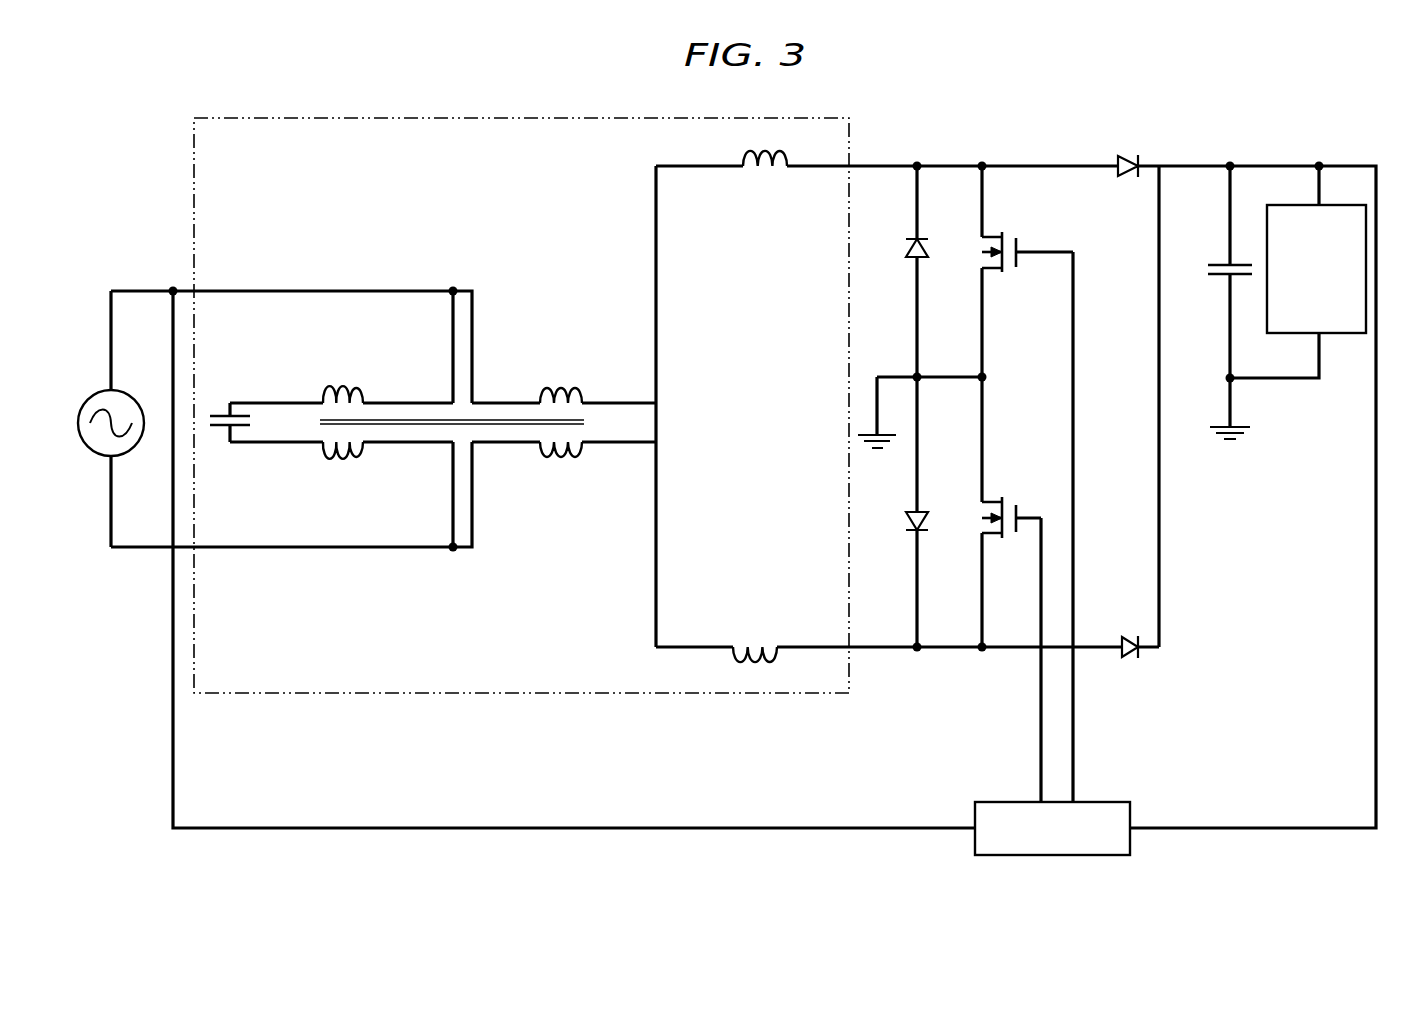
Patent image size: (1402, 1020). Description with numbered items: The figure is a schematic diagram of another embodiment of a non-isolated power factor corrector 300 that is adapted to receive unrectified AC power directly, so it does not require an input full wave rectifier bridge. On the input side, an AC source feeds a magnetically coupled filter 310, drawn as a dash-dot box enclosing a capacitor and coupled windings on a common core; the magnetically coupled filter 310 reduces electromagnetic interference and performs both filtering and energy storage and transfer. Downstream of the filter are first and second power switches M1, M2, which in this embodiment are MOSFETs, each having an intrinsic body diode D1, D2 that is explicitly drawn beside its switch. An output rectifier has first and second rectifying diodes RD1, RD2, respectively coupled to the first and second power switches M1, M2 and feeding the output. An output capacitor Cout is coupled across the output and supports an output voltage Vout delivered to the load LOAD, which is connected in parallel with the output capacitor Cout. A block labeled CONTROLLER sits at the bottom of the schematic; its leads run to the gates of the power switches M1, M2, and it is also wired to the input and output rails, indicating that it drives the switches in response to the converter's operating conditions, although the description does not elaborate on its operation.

The non-isolated power factor corrector 300 is at (888, 104).
The magnetically coupled filter 310 is at (452, 118).
The intrinsic body diode D1 is at (898, 250).
The intrinsic body diode D2 is at (898, 523).
The first rectifying diode RD1 is at (1126, 151).
The second rectifying diode RD2 is at (1131, 632).
The first power switch M1 is at (1002, 239).
The second power switch M2 is at (1002, 505).
The output capacitor Cout is at (1212, 252).
The output voltage Vout is at (1288, 152).
The load LOAD is at (1316, 269).
The controller CONTROLLER is at (1052, 828).